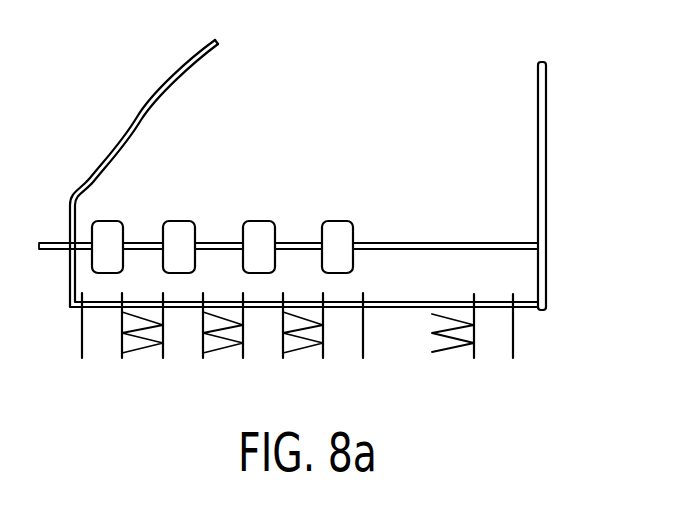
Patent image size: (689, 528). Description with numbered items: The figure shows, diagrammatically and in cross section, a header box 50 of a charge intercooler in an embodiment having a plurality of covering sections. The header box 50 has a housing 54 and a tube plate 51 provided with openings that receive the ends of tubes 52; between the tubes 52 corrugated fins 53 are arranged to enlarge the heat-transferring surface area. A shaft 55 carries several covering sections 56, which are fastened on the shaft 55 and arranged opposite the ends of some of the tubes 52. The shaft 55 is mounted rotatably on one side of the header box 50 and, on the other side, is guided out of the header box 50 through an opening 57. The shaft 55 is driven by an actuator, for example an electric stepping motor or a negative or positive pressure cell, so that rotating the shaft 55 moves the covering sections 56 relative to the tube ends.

The header box 50 is at (97, 75).
The tube plate 51 is at (153, 312).
The tubes 52 is at (513, 350).
The corrugated fins 53 is at (302, 349).
The housing 54 is at (547, 150).
The shaft 55 is at (133, 252).
The covering sections 56 is at (92, 232).
The opening 57 is at (63, 256).